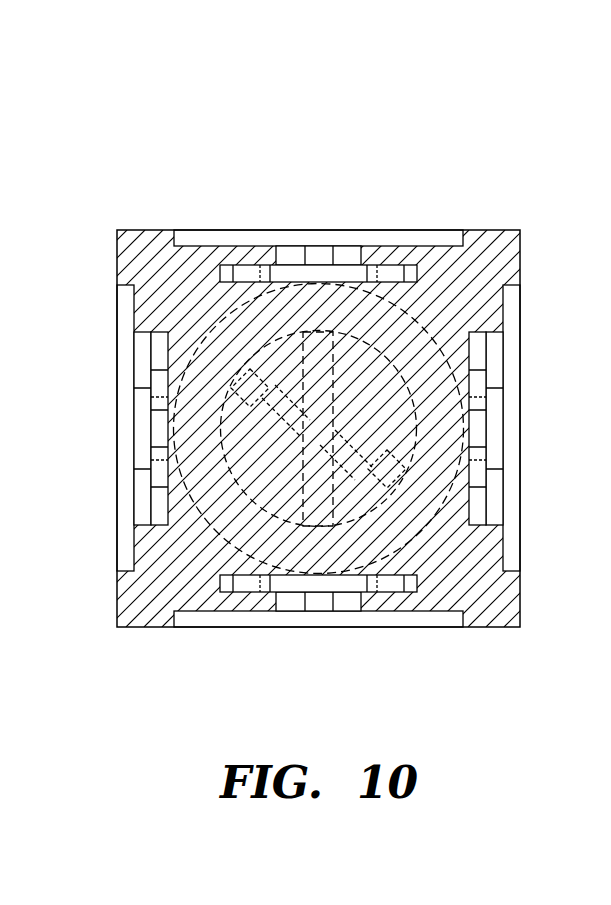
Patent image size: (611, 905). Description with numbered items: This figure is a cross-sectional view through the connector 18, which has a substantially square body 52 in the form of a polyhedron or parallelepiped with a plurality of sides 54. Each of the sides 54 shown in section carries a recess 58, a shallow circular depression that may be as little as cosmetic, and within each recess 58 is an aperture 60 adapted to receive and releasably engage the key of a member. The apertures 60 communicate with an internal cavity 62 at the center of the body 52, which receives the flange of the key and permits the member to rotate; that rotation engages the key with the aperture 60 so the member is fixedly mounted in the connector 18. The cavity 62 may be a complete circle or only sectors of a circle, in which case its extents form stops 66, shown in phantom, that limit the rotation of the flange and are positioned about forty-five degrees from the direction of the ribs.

The connector 18 is at (420, 92).
The body 52 is at (117, 252).
The sides 54 is at (136, 226).
The recess 58 is at (214, 240).
The aperture 60 is at (322, 258).
The internal cavity 62 is at (412, 275).
The stops 66 is at (255, 378).